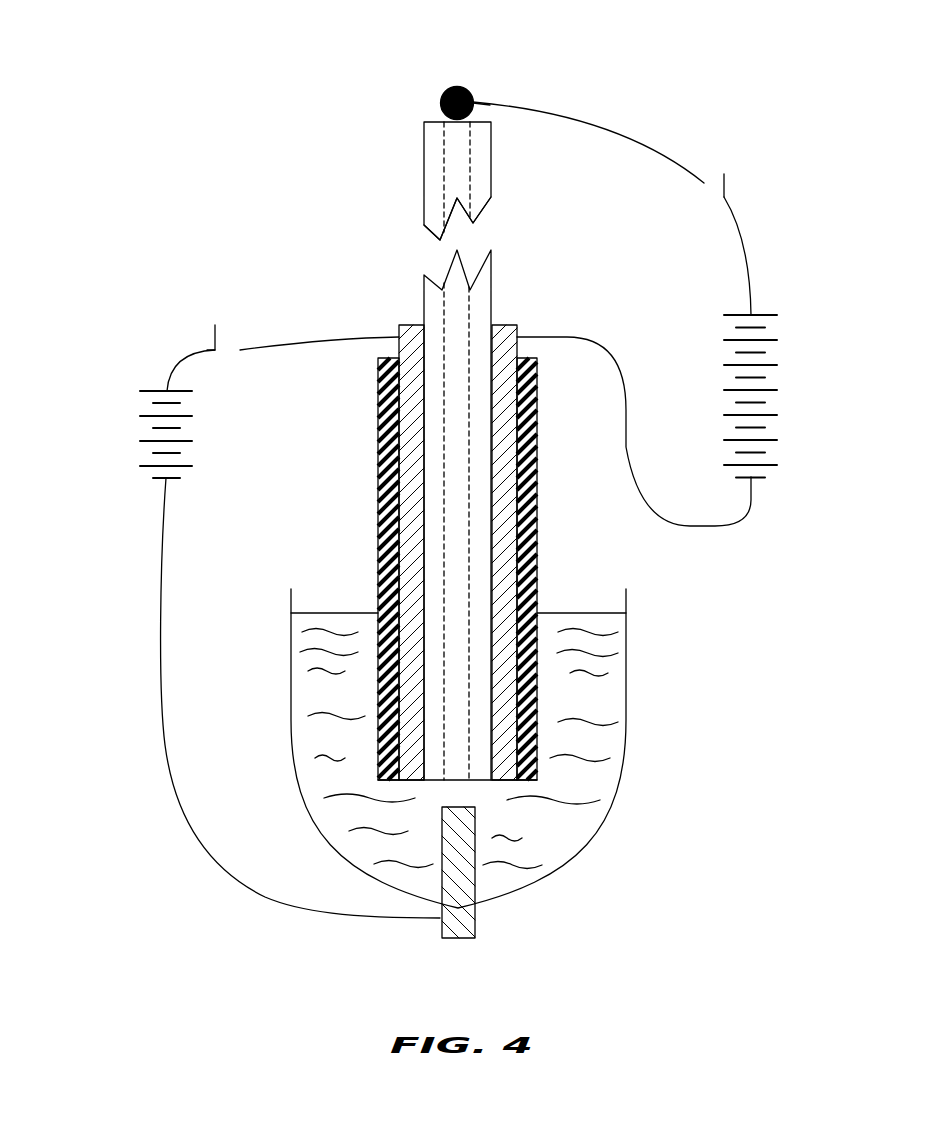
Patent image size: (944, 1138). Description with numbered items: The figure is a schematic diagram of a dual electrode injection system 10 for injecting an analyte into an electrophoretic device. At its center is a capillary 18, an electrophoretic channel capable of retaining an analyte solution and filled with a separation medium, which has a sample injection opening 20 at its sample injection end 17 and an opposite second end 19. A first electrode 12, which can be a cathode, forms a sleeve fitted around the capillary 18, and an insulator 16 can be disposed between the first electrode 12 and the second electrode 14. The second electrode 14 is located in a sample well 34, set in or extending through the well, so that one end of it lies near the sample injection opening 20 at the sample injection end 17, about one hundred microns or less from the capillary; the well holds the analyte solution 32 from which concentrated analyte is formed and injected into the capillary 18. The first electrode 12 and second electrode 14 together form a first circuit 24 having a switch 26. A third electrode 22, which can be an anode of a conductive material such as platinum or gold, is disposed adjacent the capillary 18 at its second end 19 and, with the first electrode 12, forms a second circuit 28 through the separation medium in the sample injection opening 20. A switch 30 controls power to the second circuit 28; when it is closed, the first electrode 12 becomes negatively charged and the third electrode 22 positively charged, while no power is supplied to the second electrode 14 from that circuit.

The system 10 is at (255, 88).
The first electrode 12 is at (415, 327).
The second electrode 14 is at (477, 907).
The insulator 16 is at (378, 387).
The sample injection end 17 is at (478, 781).
The capillary 18 is at (433, 148).
The second end 19 is at (480, 123).
The sample injection opening 20 is at (455, 195).
The third electrode 22 is at (467, 88).
The first circuit 24 is at (128, 433).
The switch 26 is at (213, 338).
The second circuit 28 is at (790, 404).
The switch 30 is at (727, 192).
The analyte solution 32 is at (303, 688).
The sample well 34 is at (627, 698).